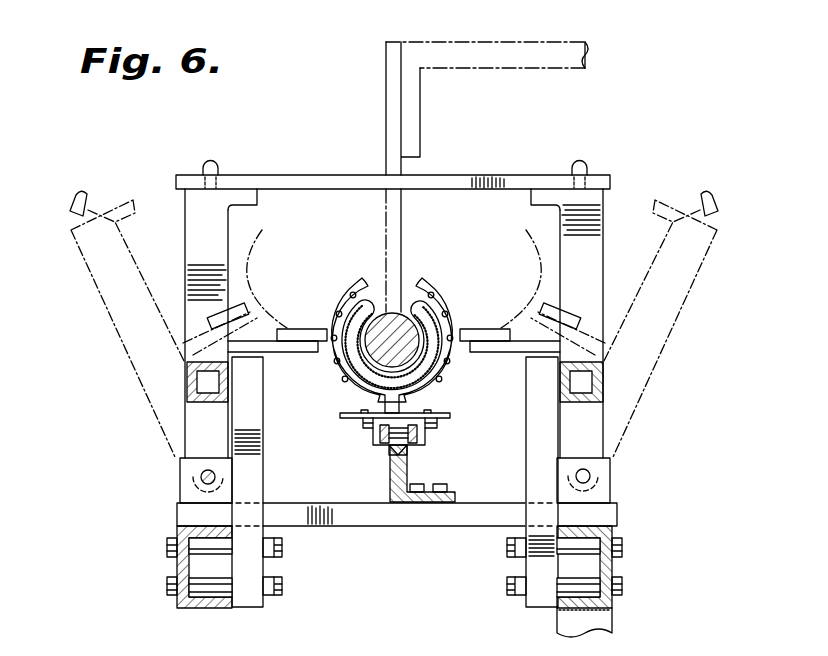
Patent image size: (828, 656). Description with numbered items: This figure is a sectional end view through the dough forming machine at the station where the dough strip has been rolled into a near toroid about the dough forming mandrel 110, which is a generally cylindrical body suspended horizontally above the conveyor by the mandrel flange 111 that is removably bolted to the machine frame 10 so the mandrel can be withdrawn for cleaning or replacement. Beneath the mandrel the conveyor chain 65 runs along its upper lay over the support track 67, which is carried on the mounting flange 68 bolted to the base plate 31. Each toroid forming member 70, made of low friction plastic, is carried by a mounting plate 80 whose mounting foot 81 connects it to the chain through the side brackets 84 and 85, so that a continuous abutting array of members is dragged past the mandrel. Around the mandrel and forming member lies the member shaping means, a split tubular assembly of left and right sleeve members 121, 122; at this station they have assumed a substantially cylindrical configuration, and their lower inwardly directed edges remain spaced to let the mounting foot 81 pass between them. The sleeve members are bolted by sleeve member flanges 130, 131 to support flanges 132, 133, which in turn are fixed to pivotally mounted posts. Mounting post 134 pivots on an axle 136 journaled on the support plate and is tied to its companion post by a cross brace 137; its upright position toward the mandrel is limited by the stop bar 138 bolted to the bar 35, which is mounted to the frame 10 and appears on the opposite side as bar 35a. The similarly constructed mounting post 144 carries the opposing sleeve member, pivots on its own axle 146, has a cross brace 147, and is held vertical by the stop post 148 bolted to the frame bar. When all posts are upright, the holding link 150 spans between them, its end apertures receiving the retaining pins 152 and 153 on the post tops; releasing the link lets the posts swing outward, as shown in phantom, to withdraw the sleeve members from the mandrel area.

The machine frame 10 is at (605, 625).
The base plate 31 is at (456, 525).
The bar 35 is at (185, 572).
The wheel bracket 35a is at (604, 566).
The chain 65 is at (391, 448).
The support track 67 is at (408, 450).
The mounting flange 68 is at (393, 502).
The toroid forming member 70 is at (410, 292).
The mounting plate 80 is at (450, 416).
The mounting foot 81 is at (400, 407).
The side bracket 84 is at (373, 438).
The side bracket 85 is at (417, 433).
The dough forming mandrel 110 is at (388, 332).
The mandrel flange 111 is at (386, 92).
The left sleeve member 121 is at (437, 310).
The right sleeve member 122 is at (335, 305).
The sleeve member flange 130 is at (305, 330).
The sleeve member flange 131 is at (478, 330).
The support flange 132 is at (276, 344).
The support flange 133 is at (603, 333).
The mounting post 134 is at (185, 222).
The axle 136 is at (202, 480).
The cross brace 137 is at (196, 378).
The stop bar 138 is at (245, 428).
The mounting post 144 is at (603, 222).
The axle 146 is at (590, 476).
The cross brace 147 is at (603, 368).
The stop post 148 is at (560, 430).
The holding link 150 is at (455, 175).
The retaining pin 152 is at (212, 162).
The retaining pin 153 is at (580, 161).